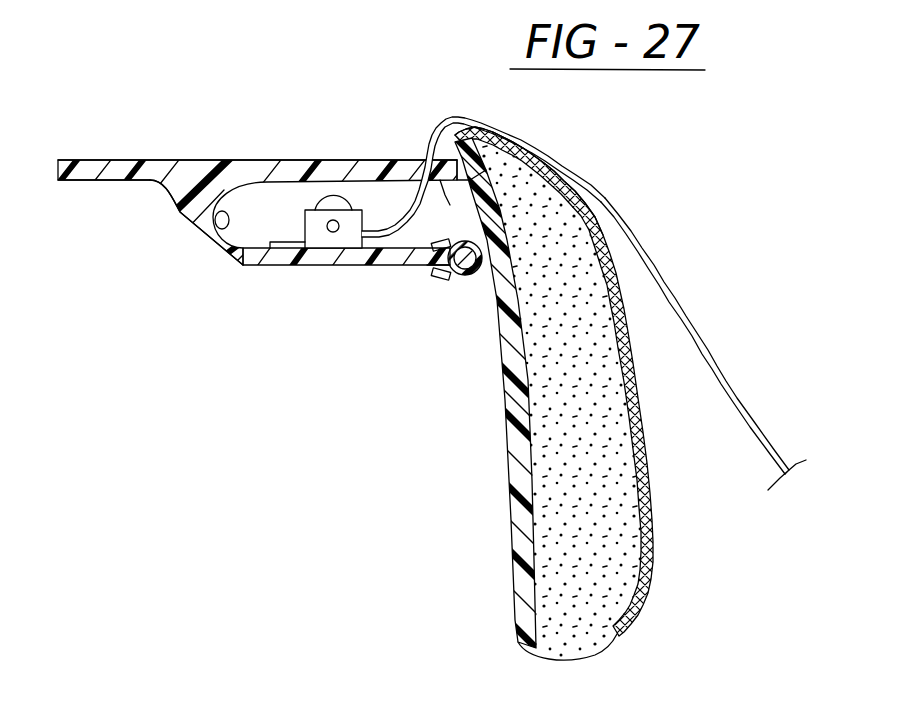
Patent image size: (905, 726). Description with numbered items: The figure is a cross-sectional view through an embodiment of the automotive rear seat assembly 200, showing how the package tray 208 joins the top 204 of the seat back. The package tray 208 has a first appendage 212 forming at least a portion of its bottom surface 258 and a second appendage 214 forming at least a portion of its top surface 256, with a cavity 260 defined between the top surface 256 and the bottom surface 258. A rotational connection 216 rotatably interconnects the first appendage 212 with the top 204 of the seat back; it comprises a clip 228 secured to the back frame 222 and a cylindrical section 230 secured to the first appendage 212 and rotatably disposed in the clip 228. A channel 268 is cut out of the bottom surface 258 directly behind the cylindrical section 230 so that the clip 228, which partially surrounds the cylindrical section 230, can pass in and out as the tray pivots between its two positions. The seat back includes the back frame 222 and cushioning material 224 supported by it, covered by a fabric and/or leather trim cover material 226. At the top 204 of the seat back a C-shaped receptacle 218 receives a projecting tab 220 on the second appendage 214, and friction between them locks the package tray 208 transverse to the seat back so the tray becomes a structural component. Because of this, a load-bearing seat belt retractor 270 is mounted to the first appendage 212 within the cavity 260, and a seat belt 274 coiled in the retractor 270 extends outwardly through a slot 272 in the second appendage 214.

The automotive rear seat assembly 200 is at (317, 426).
The top of the seat back 204 is at (472, 130).
The package tray 208 is at (160, 115).
The first appendage 212 is at (352, 257).
The second appendage 214 is at (333, 172).
The rotational connection 216 is at (443, 312).
The receptacle 218 is at (462, 185).
The projecting tab 220 is at (443, 180).
The back frame 222 is at (518, 473).
The cushioning material 224 is at (580, 633).
The trim cover material 226 is at (638, 453).
The clip 228 is at (465, 277).
The cylindrical section 230 is at (433, 270).
The top surface 256 is at (105, 160).
The bottom surface 258 is at (120, 181).
The cavity 260 is at (210, 223).
The channel 268 is at (427, 265).
The seat belt retractor 270 is at (313, 224).
The slot 272 is at (417, 170).
The seat belt 274 is at (655, 258).